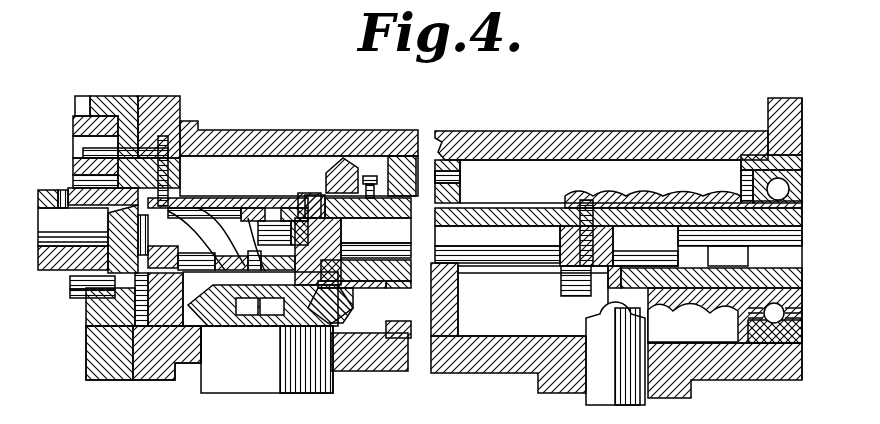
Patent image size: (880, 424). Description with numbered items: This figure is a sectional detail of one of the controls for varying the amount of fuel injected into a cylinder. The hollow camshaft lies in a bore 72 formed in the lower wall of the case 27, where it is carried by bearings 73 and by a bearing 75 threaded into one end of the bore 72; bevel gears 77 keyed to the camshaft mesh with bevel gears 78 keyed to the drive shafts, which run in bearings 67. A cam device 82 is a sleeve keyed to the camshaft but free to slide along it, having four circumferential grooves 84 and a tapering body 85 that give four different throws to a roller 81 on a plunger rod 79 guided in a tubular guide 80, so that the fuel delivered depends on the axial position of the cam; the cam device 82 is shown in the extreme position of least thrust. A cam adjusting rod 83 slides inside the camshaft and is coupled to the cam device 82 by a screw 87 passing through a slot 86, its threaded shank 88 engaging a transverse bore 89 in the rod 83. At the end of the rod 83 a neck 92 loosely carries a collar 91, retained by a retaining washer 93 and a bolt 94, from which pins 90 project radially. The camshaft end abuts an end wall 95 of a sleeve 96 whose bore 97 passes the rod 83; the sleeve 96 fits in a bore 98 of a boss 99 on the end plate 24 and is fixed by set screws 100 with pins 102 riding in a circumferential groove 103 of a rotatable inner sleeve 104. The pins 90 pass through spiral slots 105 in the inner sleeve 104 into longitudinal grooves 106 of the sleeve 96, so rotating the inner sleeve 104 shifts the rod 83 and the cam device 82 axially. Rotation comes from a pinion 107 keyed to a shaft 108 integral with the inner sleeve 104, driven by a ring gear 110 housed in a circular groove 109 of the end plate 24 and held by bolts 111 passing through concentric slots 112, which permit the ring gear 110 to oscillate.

The end plate 24 is at (140, 92).
The case 27 is at (262, 132).
The bearings 67 is at (256, 384).
The bore 72 is at (496, 142).
The bearings 73 is at (438, 150).
The bearing 75 is at (752, 160).
The bevel gears 77 is at (332, 160).
The bevel gears 78 is at (342, 300).
The plunger rod 79 is at (606, 392).
The tubular guides 80 is at (572, 386).
The roller 81 is at (590, 316).
The cam device 82 is at (562, 190).
The cam adjusting rod 83 is at (490, 226).
The circumferential grooves 84 is at (632, 186).
The tapering body 85 is at (725, 343).
The slot 86 is at (500, 268).
The screw 87 is at (556, 288).
The threaded shank 88 is at (606, 240).
The transverse bore 89 is at (580, 194).
The pins 90 is at (292, 212).
The collar 91 is at (305, 207).
The neck 92 is at (272, 307).
The retaining washer 93 is at (266, 212).
The bolt 94 is at (244, 200).
The end wall 95 is at (340, 210).
The sleeve 96 is at (247, 307).
The bore 97 is at (376, 238).
The bore 98 is at (206, 190).
The boss 99 is at (190, 146).
The set screws 100 is at (130, 300).
The pins 102 is at (128, 190).
The circumferential groove 103 is at (134, 262).
The inner sleeve 104 is at (86, 287).
The spiral slots 105 is at (270, 305).
The grooves 106 is at (208, 188).
The pinion 107 is at (64, 273).
The shaft 108 is at (46, 198).
The circular groove 109 is at (112, 108).
The ring gear 110 is at (76, 90).
The bolts 111 is at (70, 133).
The slots 112 is at (66, 114).